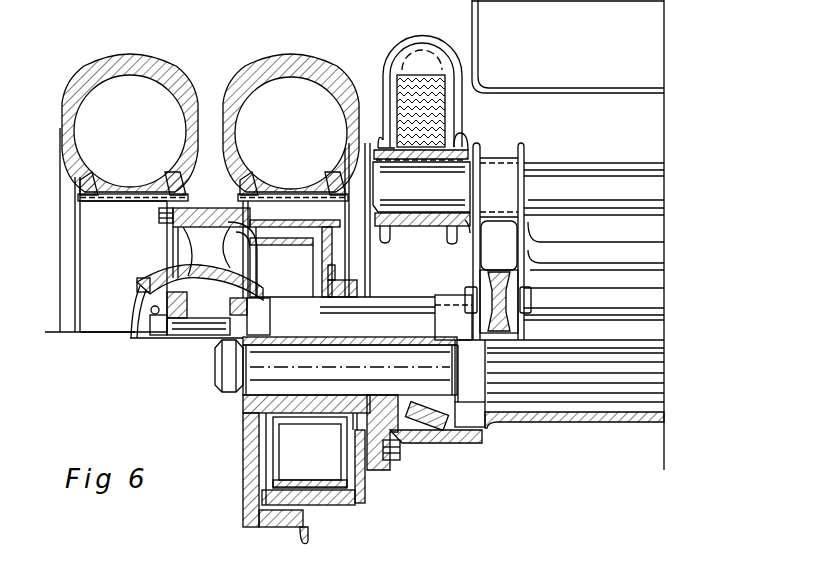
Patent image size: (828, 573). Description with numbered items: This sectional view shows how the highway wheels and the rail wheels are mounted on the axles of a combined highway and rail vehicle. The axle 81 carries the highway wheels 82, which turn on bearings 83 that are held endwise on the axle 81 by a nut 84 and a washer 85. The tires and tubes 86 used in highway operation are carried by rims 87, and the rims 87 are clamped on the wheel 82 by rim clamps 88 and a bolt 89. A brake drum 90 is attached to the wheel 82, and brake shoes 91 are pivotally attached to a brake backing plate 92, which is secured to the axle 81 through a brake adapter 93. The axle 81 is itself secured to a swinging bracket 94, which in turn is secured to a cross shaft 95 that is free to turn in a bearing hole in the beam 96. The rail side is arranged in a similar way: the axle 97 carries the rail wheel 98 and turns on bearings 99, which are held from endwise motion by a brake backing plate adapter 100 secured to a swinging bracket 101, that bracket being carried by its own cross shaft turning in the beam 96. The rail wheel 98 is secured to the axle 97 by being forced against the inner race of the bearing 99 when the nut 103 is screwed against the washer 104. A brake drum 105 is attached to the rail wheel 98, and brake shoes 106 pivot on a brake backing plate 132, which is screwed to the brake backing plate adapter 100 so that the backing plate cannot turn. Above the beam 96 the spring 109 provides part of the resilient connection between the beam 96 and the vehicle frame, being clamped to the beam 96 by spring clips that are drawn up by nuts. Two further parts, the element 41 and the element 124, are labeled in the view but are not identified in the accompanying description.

The frame 41 is at (354, 286).
The axle 81 is at (378, 303).
The highway wheel 82 is at (186, 240).
The bearings 83 is at (232, 320).
The nut 84 is at (138, 325).
The washer 85 is at (157, 338).
The tires and tubes 86 is at (88, 163).
The rims 87 is at (128, 194).
The rim clamps 88 is at (176, 225).
The bolt 89 is at (159, 214).
The brake drum 90 is at (290, 222).
The brake shoes 91 is at (277, 245).
The brake backing plate 92 is at (332, 251).
The brake adapter 93 is at (352, 290).
The swinging bracket 94 is at (475, 257).
The cross shaft 95 is at (565, 163).
The beam 96 is at (467, 145).
The axle 97 is at (525, 403).
The rail wheel 98 is at (262, 530).
The bearings 99 is at (408, 427).
The brake backing plate adapter 100 is at (368, 467).
The swinging bracket 101 is at (481, 437).
The nut 103 is at (225, 392).
The washer 104 is at (243, 400).
The brake drum 105 is at (333, 506).
The brake shoes 106 is at (307, 481).
The spring 109 is at (397, 82).
The pin 124 is at (497, 272).
The brake backing plate 132 is at (372, 490).